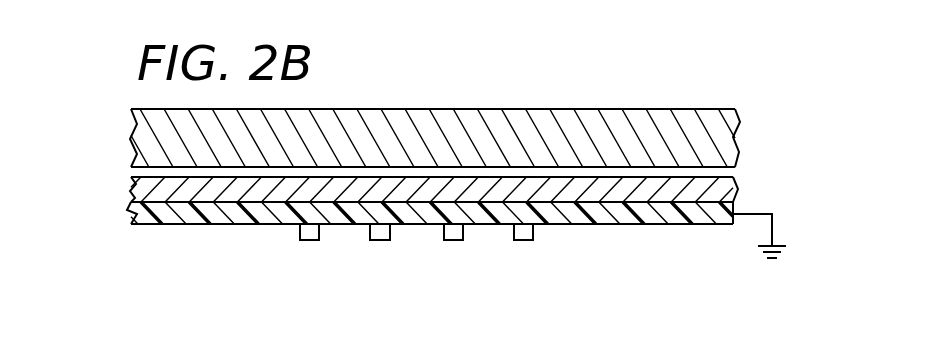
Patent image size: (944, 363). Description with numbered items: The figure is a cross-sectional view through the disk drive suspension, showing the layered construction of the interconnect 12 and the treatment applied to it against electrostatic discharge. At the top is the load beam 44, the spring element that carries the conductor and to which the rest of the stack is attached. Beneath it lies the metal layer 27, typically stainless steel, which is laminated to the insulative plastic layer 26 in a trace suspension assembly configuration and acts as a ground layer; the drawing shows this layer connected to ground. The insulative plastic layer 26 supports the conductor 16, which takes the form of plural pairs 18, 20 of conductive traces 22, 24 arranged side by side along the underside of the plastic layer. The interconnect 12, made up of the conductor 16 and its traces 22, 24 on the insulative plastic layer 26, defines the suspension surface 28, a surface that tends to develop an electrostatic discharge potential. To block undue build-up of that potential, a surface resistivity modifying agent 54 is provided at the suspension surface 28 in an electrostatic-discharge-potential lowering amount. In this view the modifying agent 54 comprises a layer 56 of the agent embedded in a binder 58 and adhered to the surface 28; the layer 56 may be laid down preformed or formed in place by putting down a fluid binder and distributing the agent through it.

The interconnect 12 is at (666, 100).
The load beam 44 is at (714, 121).
The metal layer 27 is at (722, 191).
The insulative plastic layer 26 is at (628, 225).
The layer of modifying agent 56 is at (129, 212).
The binder 58 is at (148, 226).
The suspension surface 28 is at (195, 226).
The surface resistivity modifying agent 54 is at (720, 232).
The conductor 16 is at (272, 247).
The conductive traces 22 is at (305, 243).
The conductive traces 24 is at (445, 232).
The pair of conductive traces 18 is at (337, 238).
The pair of conductive traces 20 is at (490, 233).